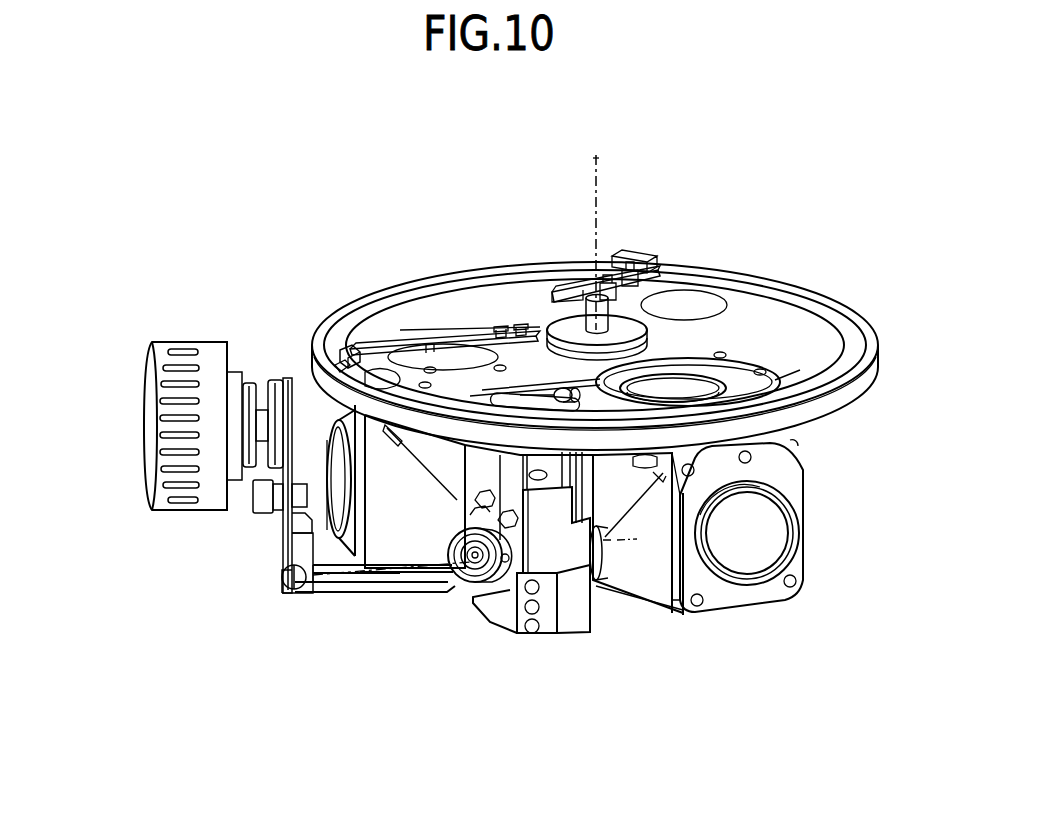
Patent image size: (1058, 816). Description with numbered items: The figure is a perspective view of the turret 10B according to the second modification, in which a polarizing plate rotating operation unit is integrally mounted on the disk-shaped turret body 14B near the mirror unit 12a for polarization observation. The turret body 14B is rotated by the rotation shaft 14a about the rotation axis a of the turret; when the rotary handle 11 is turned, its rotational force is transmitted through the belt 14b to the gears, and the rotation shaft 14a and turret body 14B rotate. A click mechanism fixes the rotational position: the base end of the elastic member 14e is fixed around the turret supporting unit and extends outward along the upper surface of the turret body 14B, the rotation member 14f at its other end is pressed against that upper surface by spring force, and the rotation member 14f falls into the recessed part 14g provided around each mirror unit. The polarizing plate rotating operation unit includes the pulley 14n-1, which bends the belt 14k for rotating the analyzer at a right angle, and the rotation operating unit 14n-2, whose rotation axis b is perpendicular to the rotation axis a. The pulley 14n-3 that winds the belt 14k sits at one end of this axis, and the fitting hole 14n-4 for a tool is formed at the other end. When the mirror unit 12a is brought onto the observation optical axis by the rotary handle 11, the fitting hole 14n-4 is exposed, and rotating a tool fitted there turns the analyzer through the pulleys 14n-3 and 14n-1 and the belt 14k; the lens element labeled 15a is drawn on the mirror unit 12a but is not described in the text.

The turret 10B is at (718, 170).
The rotary handle 11 is at (150, 428).
The mirror unit for polarization observation 12a is at (793, 482).
The rotation shaft 14a is at (561, 325).
The turret body 14B is at (807, 333).
The belt 14b is at (355, 590).
The elastic member 14e is at (404, 342).
The rotation member 14f is at (350, 367).
The recessed part 14g is at (372, 357).
The belt 14k is at (690, 370).
The pulley 14n-1 is at (568, 397).
The rotation operating unit 14n-2 is at (576, 617).
The pulley 14n-3 is at (603, 556).
The fitting hole 14n-4 is at (487, 584).
The lens 15a is at (773, 534).
The rotation axis a is at (596, 162).
The rotation axis b is at (403, 575).